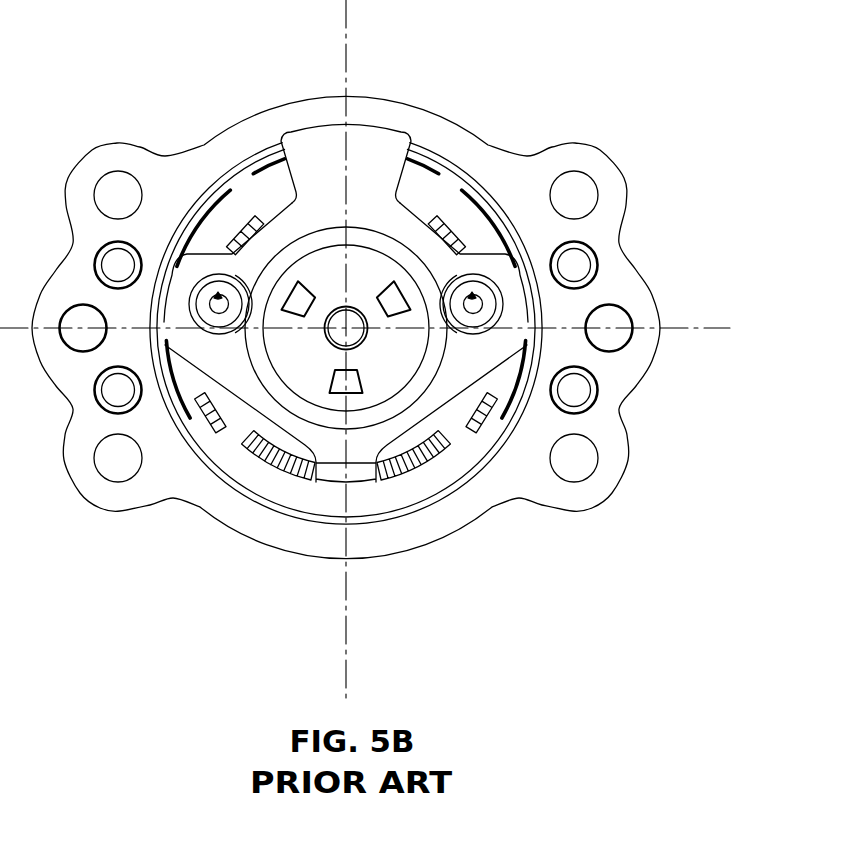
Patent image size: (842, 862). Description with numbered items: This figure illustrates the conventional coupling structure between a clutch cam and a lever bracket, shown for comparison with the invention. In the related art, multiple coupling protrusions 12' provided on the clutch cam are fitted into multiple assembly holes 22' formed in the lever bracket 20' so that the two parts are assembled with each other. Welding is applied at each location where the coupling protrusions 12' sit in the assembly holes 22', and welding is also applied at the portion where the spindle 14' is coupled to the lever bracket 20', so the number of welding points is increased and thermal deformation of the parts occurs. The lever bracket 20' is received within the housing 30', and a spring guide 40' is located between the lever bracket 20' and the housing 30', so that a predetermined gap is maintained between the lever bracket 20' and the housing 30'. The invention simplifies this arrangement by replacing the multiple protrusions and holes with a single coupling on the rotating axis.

The coupling protrusions 12' is at (285, 205).
The spindle 14' is at (431, 201).
The lever bracket 20' is at (356, 110).
The assembly holes 22' is at (346, 438).
The housing 30' is at (346, 347).
The spring guide 40' is at (350, 395).